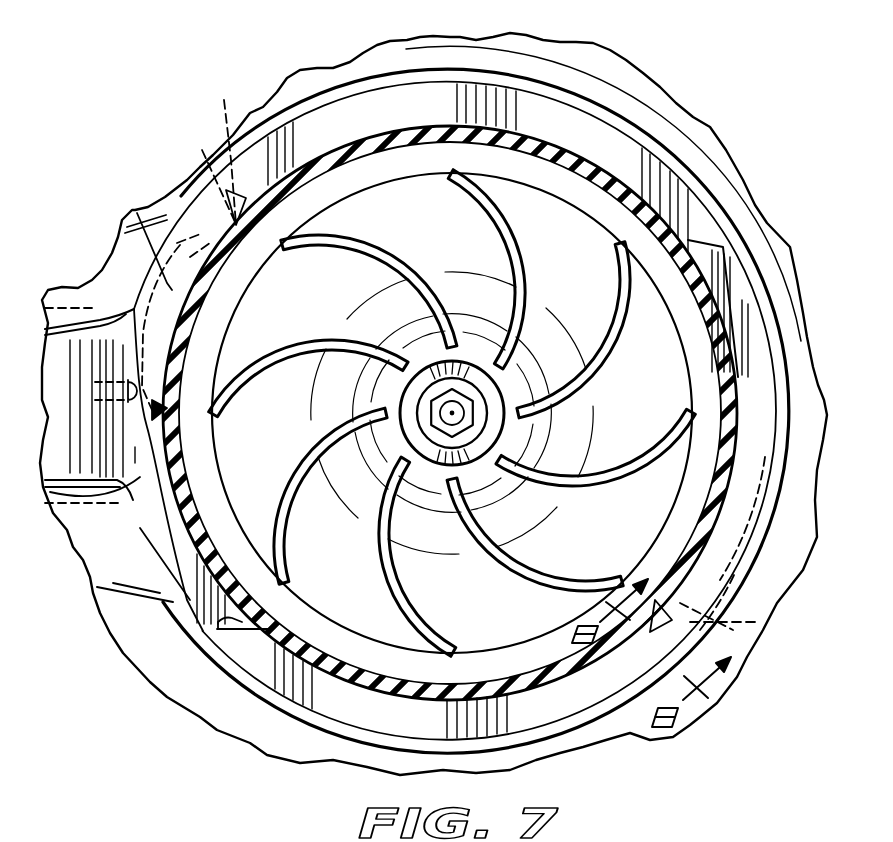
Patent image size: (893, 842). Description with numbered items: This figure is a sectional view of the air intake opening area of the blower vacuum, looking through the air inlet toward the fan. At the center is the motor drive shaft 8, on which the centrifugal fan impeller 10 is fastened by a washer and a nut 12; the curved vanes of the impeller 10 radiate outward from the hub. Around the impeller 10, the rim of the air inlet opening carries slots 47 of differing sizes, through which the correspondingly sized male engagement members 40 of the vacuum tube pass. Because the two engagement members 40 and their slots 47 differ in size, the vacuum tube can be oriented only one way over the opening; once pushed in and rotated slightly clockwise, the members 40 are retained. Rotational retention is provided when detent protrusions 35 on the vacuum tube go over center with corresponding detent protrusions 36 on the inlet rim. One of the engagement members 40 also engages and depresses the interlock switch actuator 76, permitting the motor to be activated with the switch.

The drive shaft 8 is at (456, 408).
The centrifugal fan impeller 10 is at (310, 463).
The nut 12 is at (530, 517).
The detent protrusions 35 is at (224, 100).
The detent protrusions 36 is at (202, 150).
The male engagement members 40 is at (137, 212).
The slots 47 is at (727, 247).
The interlock switch actuator 76 is at (125, 375).